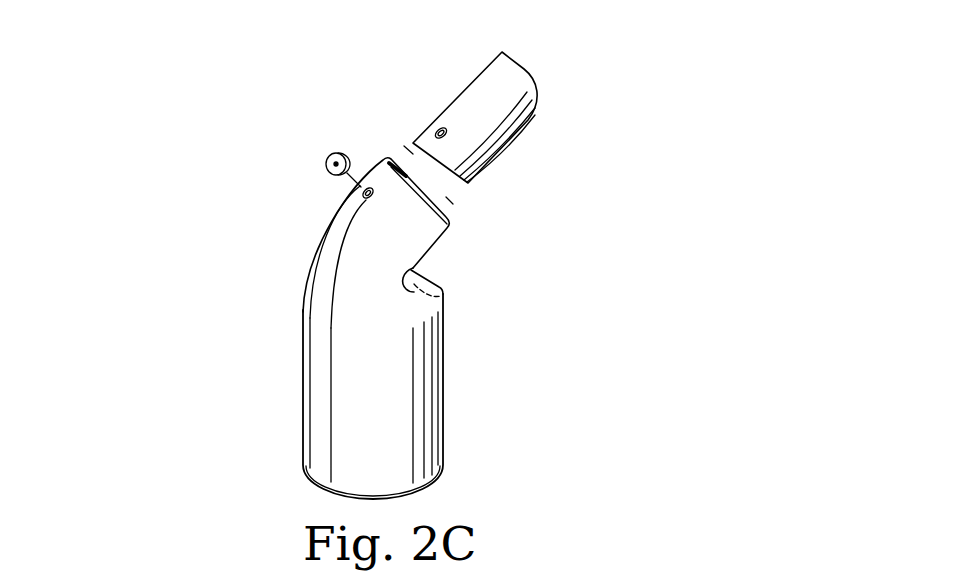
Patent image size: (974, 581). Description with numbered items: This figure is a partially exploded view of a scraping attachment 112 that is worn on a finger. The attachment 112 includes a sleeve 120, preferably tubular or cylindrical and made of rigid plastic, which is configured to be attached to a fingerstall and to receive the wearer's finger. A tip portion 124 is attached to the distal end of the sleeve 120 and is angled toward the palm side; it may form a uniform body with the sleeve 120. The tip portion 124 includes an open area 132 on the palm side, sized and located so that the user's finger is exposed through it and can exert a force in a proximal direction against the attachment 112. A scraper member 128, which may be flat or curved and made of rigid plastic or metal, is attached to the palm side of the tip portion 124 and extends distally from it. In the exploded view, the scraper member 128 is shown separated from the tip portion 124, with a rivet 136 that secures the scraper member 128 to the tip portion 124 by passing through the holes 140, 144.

The attachment 112 is at (227, 93).
The sleeve 120 is at (443, 408).
The tip portion 124 is at (317, 240).
The scraper member 128 is at (490, 60).
The open area 132 is at (478, 328).
The rivet 136 is at (327, 158).
The hole 140 is at (361, 189).
The hole 144 is at (436, 128).